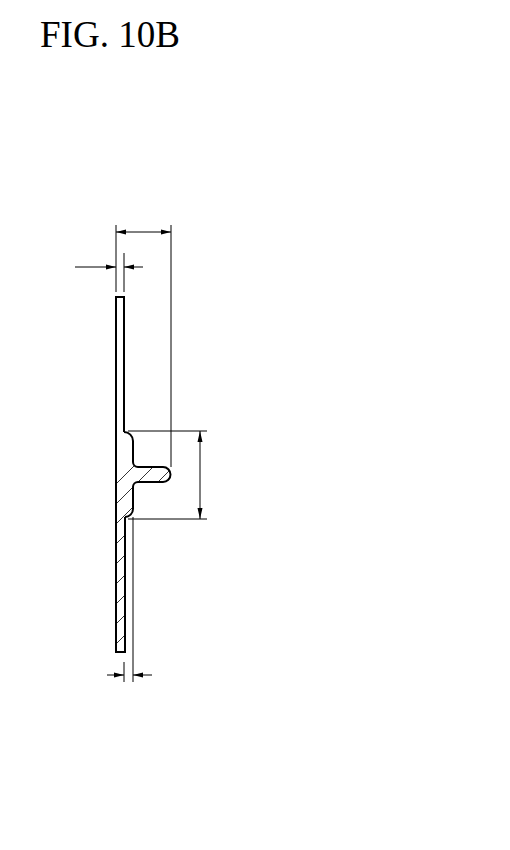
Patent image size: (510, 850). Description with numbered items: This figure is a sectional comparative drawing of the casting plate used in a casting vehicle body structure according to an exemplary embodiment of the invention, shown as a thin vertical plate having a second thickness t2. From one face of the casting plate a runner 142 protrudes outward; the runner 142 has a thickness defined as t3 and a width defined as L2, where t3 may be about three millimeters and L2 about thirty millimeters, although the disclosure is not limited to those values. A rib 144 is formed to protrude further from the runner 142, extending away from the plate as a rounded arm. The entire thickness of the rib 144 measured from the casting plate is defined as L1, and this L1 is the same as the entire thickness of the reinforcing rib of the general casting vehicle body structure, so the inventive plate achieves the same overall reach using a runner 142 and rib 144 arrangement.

The runner 142 is at (132, 449).
The rib 144 is at (157, 483).
The entire thickness of the rib from the casting plate L1 is at (143, 334).
The width of the runner L2 is at (175, 475).
The second thickness t2 is at (109, 265).
The thickness of the runner t3 is at (129, 614).